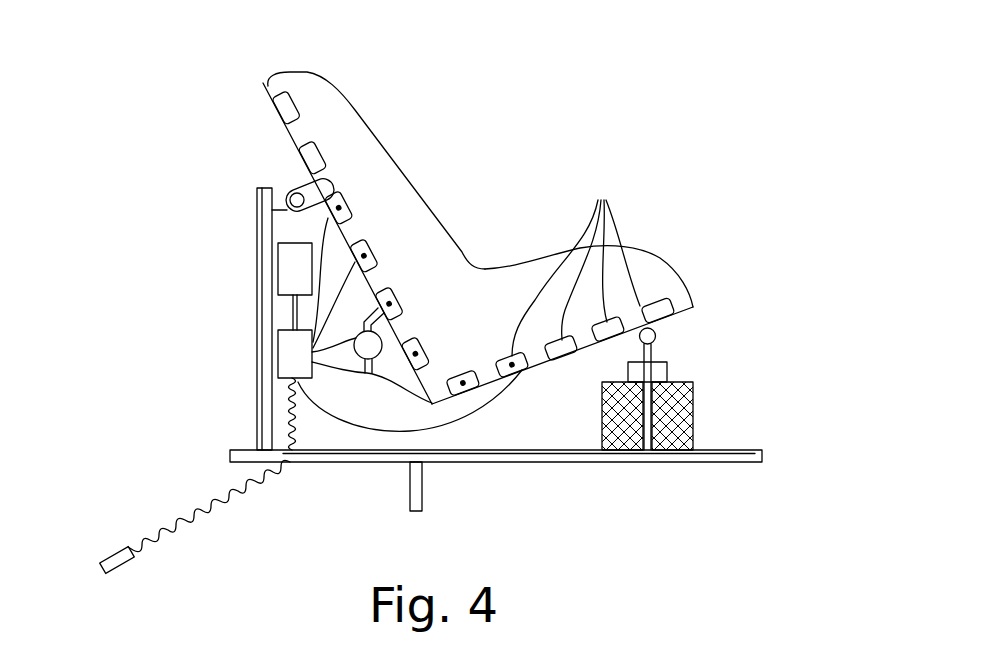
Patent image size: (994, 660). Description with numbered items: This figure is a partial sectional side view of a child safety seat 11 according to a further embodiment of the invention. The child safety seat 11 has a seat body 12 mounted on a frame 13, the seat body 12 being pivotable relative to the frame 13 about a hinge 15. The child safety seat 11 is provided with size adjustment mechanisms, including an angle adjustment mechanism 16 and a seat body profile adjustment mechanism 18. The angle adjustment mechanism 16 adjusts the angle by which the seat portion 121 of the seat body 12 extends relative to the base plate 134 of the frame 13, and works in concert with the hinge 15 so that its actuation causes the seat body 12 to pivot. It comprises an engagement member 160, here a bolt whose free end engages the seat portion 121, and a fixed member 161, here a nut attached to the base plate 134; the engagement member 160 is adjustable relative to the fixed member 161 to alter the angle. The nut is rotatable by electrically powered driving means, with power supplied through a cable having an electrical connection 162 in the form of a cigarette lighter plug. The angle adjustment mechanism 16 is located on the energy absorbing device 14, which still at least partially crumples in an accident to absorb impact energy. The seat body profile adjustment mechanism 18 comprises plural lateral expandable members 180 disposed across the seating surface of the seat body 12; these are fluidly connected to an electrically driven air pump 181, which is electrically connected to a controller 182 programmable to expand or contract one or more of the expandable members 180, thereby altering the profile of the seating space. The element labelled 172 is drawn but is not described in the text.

The child safety seat 11 is at (592, 71).
The seat body 12 is at (414, 106).
The frame 13 is at (228, 417).
The energy absorbing device 14 is at (742, 421).
The hinge 15 is at (291, 193).
The angle adjustment mechanism 16 is at (740, 268).
The seat body profile adjustment mechanism 18 is at (702, 210).
The seat portion 121 is at (540, 373).
The base plate 134 is at (592, 462).
The engagement member 160 is at (655, 354).
The fixed member 161 is at (668, 372).
The electrical connection 162 is at (111, 557).
The backrest sensor 172 is at (402, 340).
The lateral expandable members 180 is at (560, 284).
The air pump 181 is at (287, 267).
The controller 182 is at (290, 350).